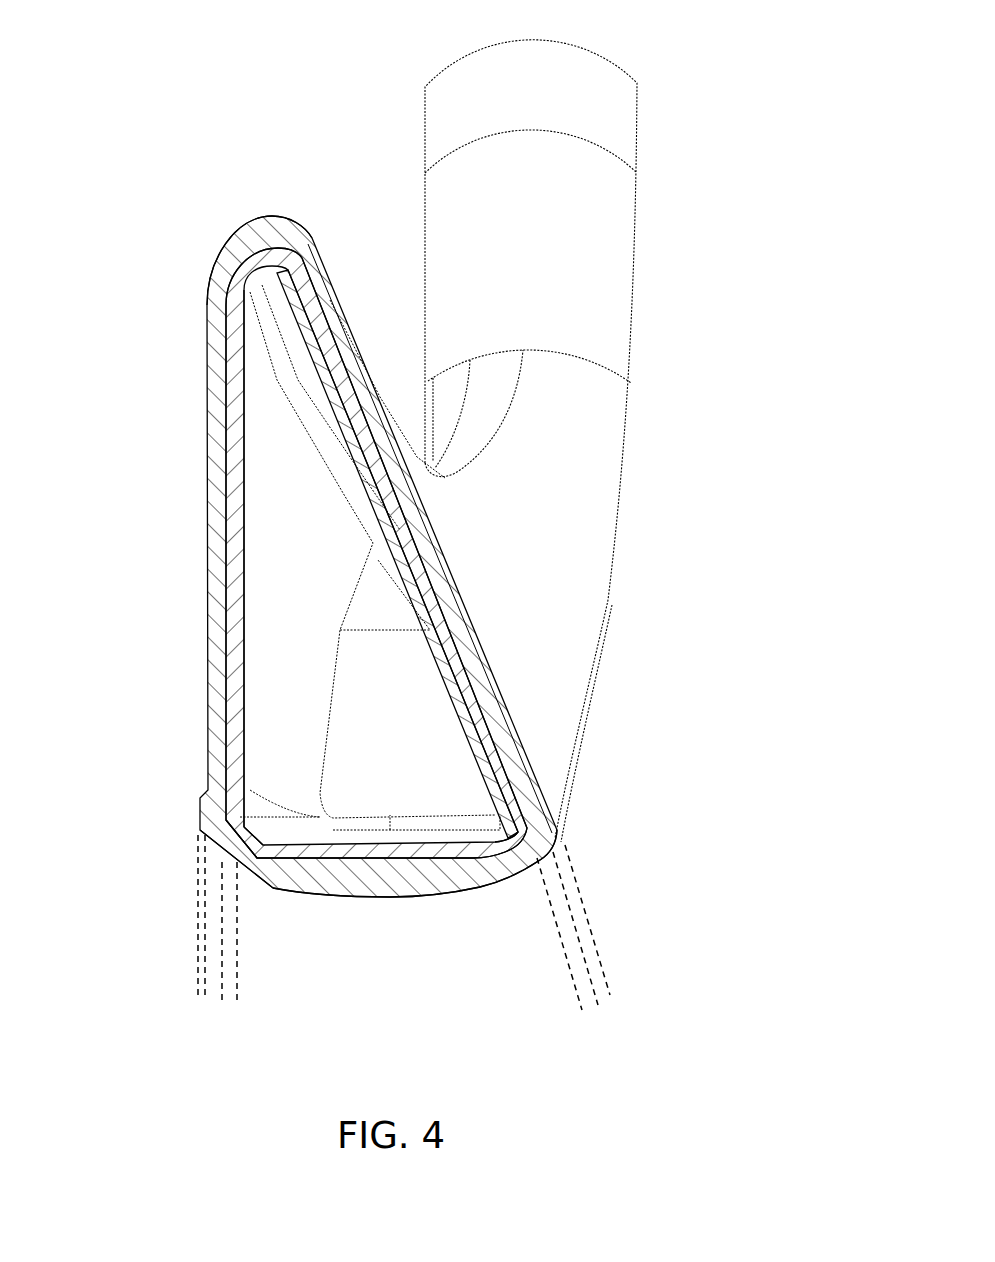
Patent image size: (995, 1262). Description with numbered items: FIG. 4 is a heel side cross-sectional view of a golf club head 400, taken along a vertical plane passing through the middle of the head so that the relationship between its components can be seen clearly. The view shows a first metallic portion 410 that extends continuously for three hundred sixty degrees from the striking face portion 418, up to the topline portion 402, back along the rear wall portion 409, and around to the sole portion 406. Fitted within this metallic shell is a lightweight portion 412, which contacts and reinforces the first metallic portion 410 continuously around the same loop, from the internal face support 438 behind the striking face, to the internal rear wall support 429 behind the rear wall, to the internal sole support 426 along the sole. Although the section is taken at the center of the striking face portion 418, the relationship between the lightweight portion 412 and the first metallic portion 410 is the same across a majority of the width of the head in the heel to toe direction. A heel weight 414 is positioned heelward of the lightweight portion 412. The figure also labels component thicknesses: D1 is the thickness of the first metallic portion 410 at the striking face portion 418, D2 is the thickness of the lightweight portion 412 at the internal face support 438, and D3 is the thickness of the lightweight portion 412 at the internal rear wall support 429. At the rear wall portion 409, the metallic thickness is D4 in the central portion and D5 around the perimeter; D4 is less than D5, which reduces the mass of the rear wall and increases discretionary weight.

The golf club head 400 is at (750, 89).
The topline portion 402 is at (245, 245).
The sole portion 406 is at (366, 899).
The rear wall portion 409 is at (218, 520).
The first metallic portion 410 is at (203, 805).
The lightweight portion 412 is at (230, 708).
The heel weight 414 is at (395, 718).
The striking face portion 418 is at (520, 752).
The internal sole support 426 is at (447, 853).
The internal rear wall support 429 is at (240, 430).
The internal face support 438 is at (515, 812).
The thickness of the first metallic portion at the striking face portion D1 is at (523, 930).
The thickness of the lightweight portion at the interior face support D2 is at (543, 1017).
The thickness of the lightweight portion at the interior rear wall support D3 is at (278, 915).
The thickness of the first metallic portion at a central portion of the rear wall po D4 is at (263, 950).
The thickness of the first metallic portion around a perimeter of the rear wall port D5 is at (263, 990).